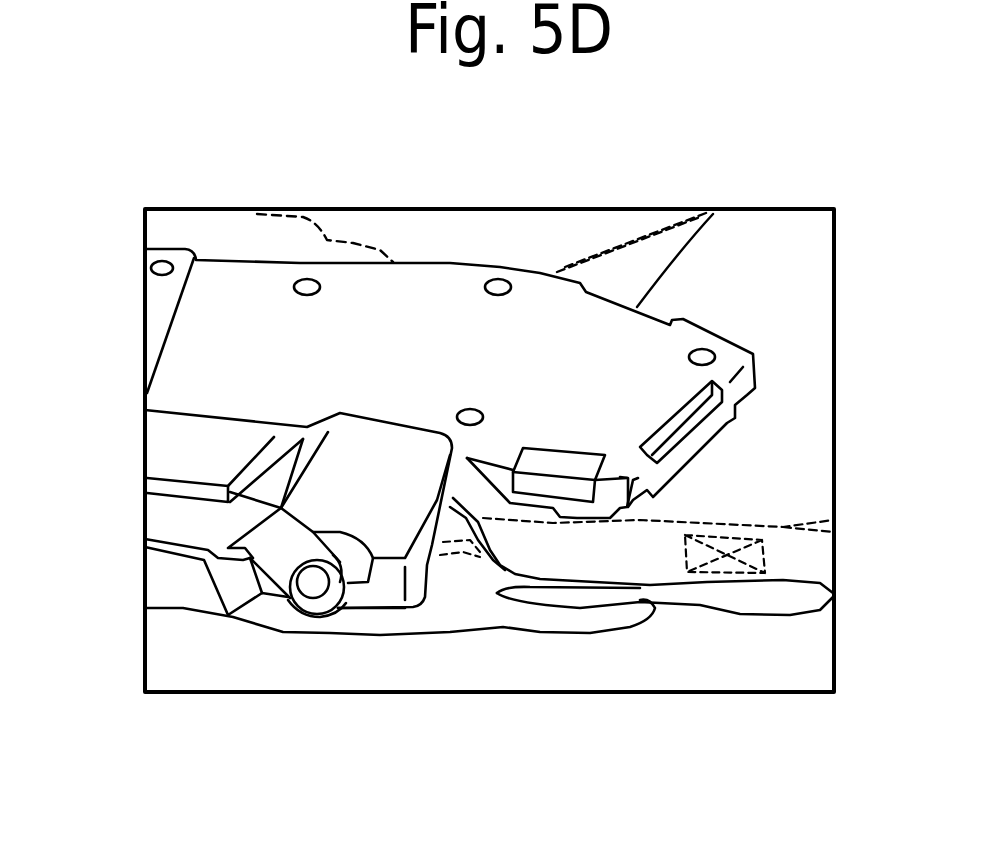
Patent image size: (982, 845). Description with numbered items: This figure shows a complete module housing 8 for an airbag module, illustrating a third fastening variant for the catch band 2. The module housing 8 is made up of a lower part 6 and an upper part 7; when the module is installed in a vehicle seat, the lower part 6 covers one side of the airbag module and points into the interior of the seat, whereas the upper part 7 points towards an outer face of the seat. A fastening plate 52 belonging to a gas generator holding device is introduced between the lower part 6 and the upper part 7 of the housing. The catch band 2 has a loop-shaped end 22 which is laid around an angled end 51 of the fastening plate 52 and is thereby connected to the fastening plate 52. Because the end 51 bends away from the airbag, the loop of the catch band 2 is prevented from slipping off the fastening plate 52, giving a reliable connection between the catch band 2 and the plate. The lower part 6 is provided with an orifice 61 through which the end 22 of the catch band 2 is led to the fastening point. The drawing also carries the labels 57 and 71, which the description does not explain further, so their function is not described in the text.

The catch band 2 is at (657, 558).
The lower part of module cover 6 is at (687, 455).
The upper part of module housing 7 is at (717, 367).
The module housing 8 is at (540, 242).
The loop-shaped end of catch band 22 is at (163, 528).
The angled end of fastening plate 51 is at (308, 603).
The fastening plate 52 is at (190, 516).
The roller 57 is at (313, 582).
The orifice 61 is at (193, 600).
The lever bar 71 is at (177, 485).